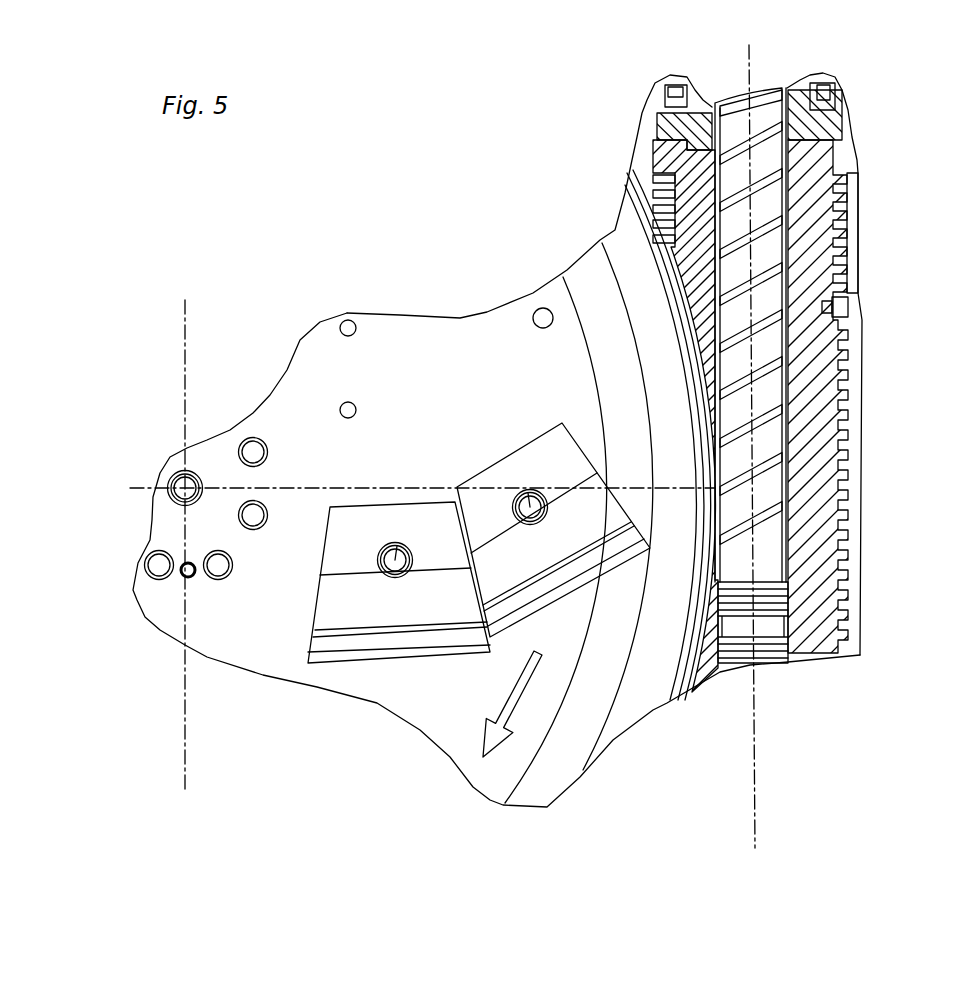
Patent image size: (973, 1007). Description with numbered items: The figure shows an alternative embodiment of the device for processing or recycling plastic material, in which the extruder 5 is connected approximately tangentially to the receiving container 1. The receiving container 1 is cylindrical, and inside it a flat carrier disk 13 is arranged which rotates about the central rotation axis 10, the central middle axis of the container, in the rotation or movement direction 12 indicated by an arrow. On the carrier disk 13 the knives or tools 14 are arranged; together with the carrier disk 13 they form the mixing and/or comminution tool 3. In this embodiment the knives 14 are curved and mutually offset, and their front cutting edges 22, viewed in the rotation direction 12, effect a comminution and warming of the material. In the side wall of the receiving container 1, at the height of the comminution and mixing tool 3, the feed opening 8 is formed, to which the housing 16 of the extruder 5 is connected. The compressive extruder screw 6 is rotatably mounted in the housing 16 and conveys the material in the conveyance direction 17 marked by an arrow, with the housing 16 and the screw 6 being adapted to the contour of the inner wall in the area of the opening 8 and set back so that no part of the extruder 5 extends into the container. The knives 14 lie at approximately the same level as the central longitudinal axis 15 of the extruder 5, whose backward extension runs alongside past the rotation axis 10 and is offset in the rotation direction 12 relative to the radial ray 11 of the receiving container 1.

The receiving container 1 is at (256, 737).
The mixing and/or comminution tool 3 is at (495, 351).
The extruder 5 is at (880, 342).
The extruder screw 6 is at (763, 408).
The feed opening 8 is at (692, 416).
The rotation axis 10 is at (185, 487).
The radial ray 11 is at (185, 352).
The rotation direction 12 is at (527, 675).
The carrier disk 13 is at (458, 422).
The knives 14 is at (330, 597).
The central longitudinal axis 15 is at (757, 710).
The housing 16 is at (822, 483).
The conveyance direction 17 is at (912, 236).
The front cutting edges 22 is at (392, 677).